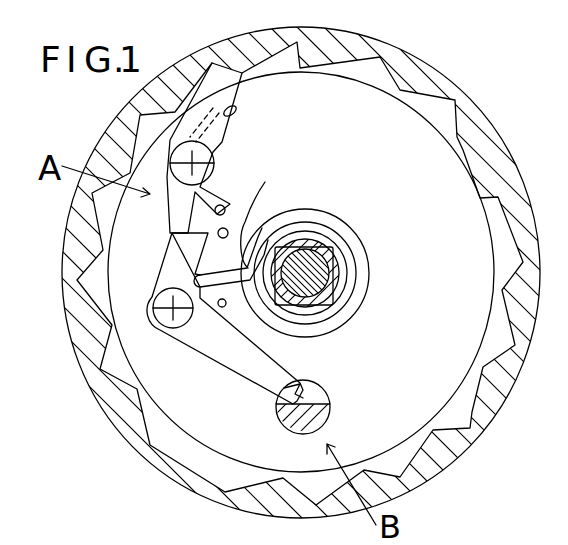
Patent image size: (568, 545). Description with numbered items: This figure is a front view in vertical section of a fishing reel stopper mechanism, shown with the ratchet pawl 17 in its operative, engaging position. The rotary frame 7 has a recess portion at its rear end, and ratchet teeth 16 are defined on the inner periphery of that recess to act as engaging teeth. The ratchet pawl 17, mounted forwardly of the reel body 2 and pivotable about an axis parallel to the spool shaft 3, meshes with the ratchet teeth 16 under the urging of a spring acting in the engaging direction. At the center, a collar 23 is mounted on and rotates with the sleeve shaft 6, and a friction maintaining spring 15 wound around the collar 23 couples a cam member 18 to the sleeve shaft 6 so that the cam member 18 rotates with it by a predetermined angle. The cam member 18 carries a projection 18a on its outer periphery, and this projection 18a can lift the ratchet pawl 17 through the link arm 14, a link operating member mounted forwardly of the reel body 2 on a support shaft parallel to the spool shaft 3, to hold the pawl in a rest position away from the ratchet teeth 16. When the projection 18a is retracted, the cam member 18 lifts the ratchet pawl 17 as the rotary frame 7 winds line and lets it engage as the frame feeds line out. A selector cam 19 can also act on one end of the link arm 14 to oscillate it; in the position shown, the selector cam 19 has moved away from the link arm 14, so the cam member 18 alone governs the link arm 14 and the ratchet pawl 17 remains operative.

The reel body 2 is at (441, 389).
The spool shaft 3 is at (323, 272).
The sleeve shaft 6 is at (322, 245).
The rotary frame 7 is at (457, 477).
The link arm 14 is at (232, 358).
The friction maintaining spring 15 is at (343, 318).
The ratchet teeth 16 is at (480, 197).
The ratchet pawl 17 is at (243, 104).
The cam member 18 is at (365, 287).
The projection 18a is at (265, 196).
The selector cam 19 is at (331, 405).
The collar 23 is at (326, 240).